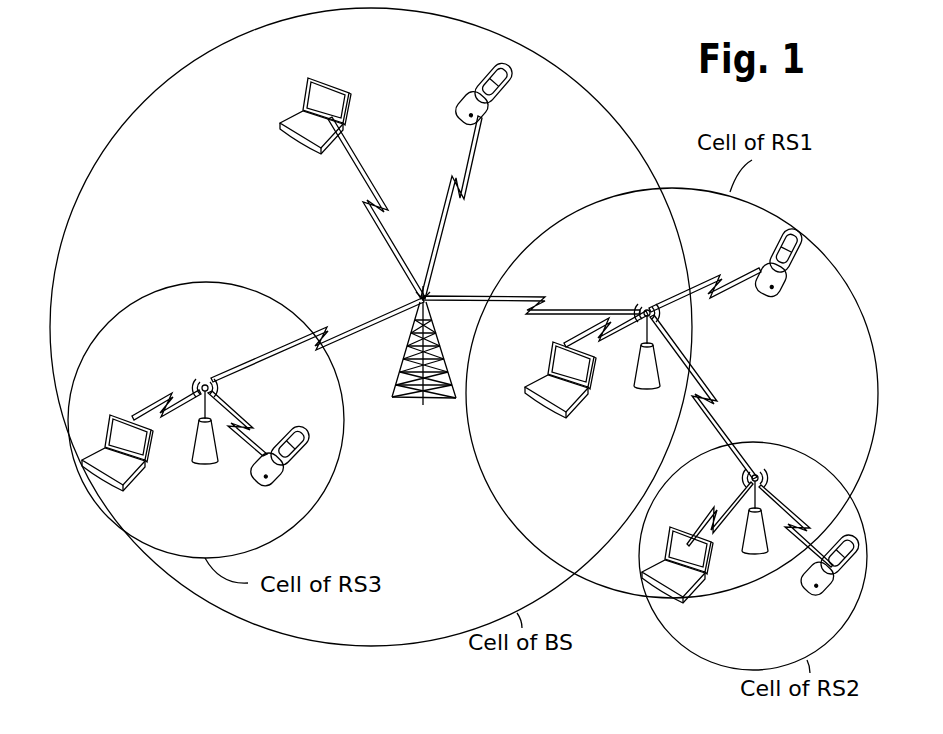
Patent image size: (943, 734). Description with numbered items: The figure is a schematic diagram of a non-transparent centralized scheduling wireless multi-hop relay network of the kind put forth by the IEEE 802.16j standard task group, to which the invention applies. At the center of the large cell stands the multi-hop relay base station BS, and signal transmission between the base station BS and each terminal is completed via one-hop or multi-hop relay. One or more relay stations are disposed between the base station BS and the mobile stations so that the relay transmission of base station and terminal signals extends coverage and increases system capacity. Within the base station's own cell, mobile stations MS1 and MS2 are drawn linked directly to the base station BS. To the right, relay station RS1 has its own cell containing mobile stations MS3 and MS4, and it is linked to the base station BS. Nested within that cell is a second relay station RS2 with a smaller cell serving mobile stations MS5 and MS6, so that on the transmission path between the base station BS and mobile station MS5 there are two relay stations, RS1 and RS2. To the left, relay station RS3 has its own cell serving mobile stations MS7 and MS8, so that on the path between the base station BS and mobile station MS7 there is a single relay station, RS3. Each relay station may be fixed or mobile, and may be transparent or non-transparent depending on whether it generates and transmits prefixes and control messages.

The base station BS is at (424, 361).
The relay station RS1 is at (642, 362).
The relay station RS2 is at (757, 523).
The relay station RS3 is at (197, 437).
The mobile station MS1 is at (494, 105).
The mobile station MS2 is at (315, 128).
The mobile station MS3 is at (784, 273).
The mobile station MS4 is at (560, 392).
The mobile station MS5 is at (831, 576).
The mobile station MS6 is at (666, 576).
The mobile station MS7 is at (279, 466).
The mobile station MS8 is at (117, 463).